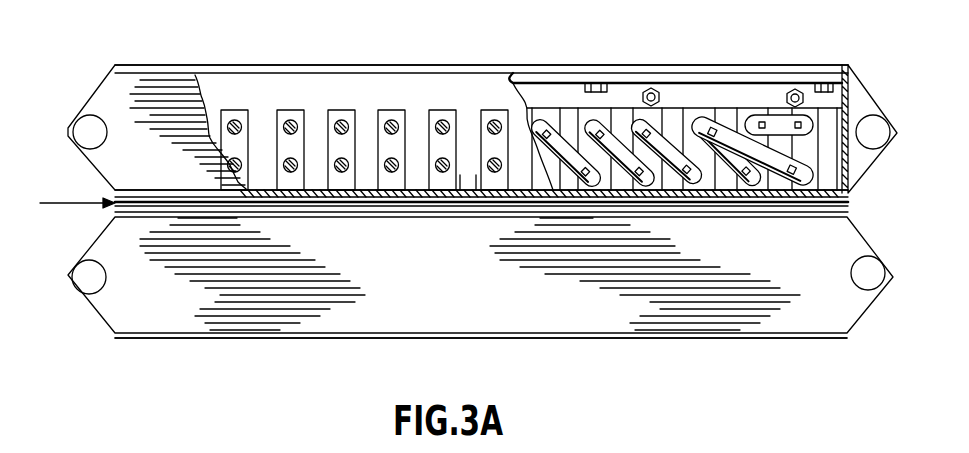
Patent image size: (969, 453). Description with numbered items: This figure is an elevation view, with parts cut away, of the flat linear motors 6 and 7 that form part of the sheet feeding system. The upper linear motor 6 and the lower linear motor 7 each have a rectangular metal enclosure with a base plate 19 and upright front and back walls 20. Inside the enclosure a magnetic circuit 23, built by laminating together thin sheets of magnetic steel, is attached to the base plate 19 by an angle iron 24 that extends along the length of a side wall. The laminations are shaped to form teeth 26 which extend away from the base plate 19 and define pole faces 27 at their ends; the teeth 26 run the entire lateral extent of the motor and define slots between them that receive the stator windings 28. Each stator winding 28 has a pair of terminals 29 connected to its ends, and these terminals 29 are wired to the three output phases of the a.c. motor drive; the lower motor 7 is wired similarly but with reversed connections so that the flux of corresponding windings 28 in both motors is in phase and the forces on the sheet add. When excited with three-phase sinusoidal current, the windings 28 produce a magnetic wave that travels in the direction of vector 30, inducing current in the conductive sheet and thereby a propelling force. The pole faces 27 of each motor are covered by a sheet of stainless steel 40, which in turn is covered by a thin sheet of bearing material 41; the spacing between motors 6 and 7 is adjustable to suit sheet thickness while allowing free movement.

The flat linear motor 6 is at (524, 58).
The flat linear motor 7 is at (547, 342).
The base plate 19 is at (835, 68).
The upright front and back walls 20 is at (848, 84).
The magnetic circuit 23 is at (312, 85).
The angle iron 24 is at (722, 86).
The teeth 26 is at (415, 173).
The pole faces 27 is at (470, 173).
The stator windings 28 is at (723, 135).
The terminals 29 is at (800, 176).
The vector 30 is at (72, 203).
The sheet of stainless steel 40 is at (845, 193).
The sheet of bearing material 41 is at (848, 204).